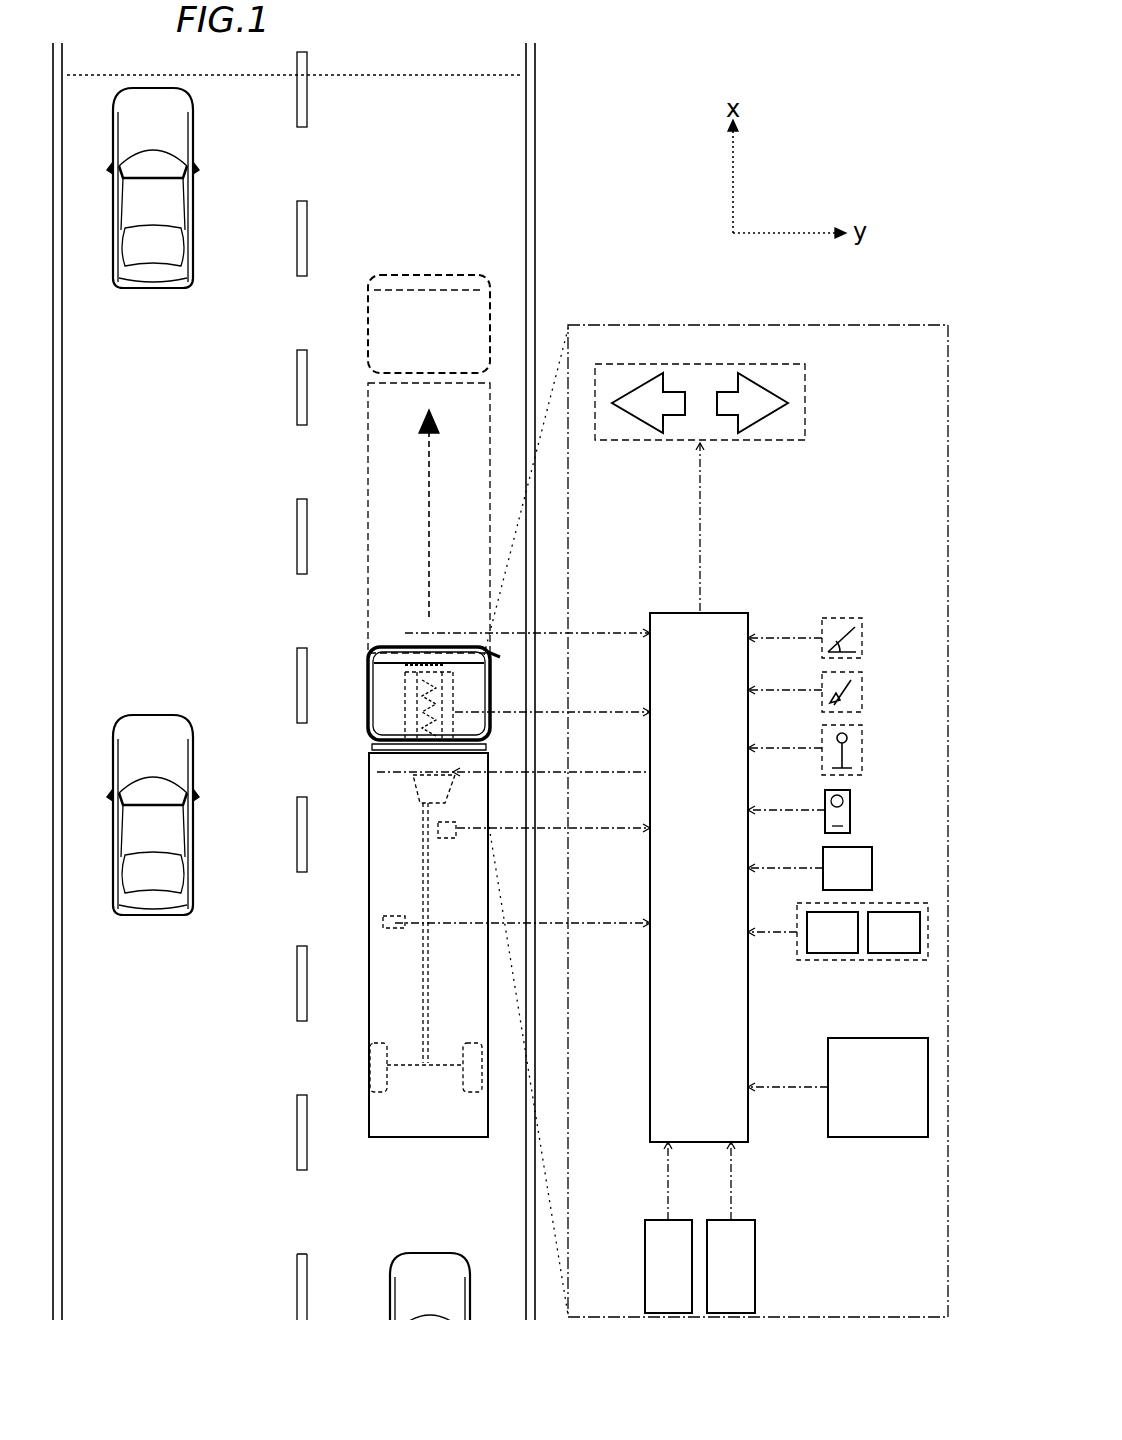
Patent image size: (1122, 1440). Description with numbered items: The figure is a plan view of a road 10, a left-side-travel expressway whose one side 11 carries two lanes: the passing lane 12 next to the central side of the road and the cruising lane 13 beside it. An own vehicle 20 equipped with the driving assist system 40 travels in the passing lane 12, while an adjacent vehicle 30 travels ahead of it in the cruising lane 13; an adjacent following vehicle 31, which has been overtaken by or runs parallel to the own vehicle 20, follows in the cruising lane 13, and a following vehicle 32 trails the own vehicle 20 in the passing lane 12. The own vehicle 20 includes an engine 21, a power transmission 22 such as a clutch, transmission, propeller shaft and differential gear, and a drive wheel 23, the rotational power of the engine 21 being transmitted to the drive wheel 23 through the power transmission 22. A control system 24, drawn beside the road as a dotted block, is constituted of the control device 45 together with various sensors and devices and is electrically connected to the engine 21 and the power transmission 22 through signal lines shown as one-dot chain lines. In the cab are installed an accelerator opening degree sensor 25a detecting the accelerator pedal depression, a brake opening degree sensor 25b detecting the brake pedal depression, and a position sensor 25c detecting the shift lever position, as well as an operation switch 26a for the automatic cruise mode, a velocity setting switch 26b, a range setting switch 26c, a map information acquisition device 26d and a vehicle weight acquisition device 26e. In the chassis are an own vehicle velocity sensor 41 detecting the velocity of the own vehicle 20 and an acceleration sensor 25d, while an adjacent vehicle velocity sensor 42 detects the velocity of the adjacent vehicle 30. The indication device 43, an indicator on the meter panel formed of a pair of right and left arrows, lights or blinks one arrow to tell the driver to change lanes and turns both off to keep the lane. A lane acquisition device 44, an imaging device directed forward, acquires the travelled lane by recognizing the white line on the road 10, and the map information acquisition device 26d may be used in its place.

The road 10 is at (536, 137).
The one side 11 is at (297, 76).
The passing lane 12 is at (381, 169).
The cruising lane 13 is at (252, 171).
The own vehicle 20 is at (397, 868).
The engine 21 is at (368, 702).
The power transmission 22 is at (420, 798).
The drive wheel 23 is at (370, 1062).
The control system 24 is at (630, 325).
The accelerator opening degree sensor 25a is at (864, 640).
The brake opening degree sensor 25b is at (864, 688).
The position sensor 25c is at (864, 748).
The acceleration sensor 25d is at (392, 930).
The operation switch 26a is at (852, 811).
The velocity setting switch 26b is at (874, 867).
The range setting switch 26c is at (835, 960).
The map information acquisition device 26d is at (690, 1282).
The vehicle weight acquisition device 26e is at (752, 1282).
The adjacent vehicle 30 is at (196, 212).
The adjacent following vehicle 31 is at (196, 854).
The following vehicle 32 is at (390, 1270).
The driving assist system 40 is at (740, 363).
The own vehicle velocity sensor 41 is at (450, 840).
The adjacent vehicle velocity sensor 42 is at (405, 660).
The indication device 43 is at (697, 364).
The lane acquisition device 44 is at (892, 1102).
The control device 45 is at (709, 862).